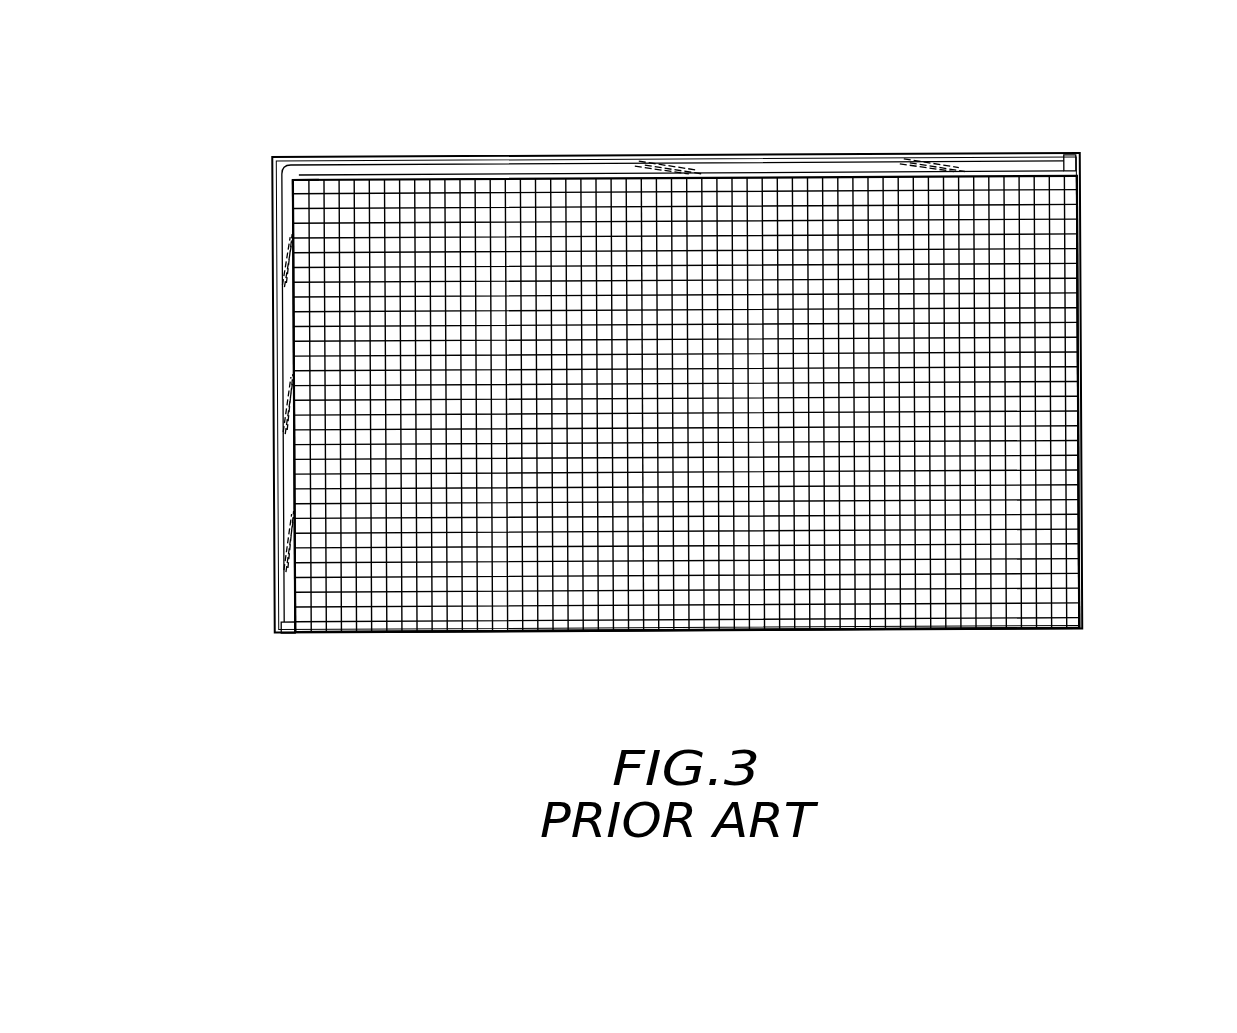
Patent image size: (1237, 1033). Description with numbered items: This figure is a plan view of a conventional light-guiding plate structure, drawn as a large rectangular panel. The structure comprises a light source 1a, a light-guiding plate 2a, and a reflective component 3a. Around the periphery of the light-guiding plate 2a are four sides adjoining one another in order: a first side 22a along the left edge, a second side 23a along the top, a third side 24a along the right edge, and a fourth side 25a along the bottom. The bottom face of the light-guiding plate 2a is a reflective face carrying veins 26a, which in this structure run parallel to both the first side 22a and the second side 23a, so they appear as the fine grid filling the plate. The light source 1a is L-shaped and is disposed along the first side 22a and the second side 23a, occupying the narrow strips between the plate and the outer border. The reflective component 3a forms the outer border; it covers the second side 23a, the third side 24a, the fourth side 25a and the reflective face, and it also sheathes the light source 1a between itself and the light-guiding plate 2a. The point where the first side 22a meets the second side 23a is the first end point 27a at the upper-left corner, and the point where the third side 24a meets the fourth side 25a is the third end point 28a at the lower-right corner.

The light source 1a is at (483, 170).
The light-guiding plate 2a is at (617, 210).
The reflective component 3a is at (278, 543).
The first side 22a is at (296, 352).
The second side 23a is at (707, 172).
The third side 24a is at (1081, 347).
The fourth side 25a is at (712, 632).
The veins 26a is at (643, 572).
The first end point 27a is at (293, 180).
The third end point 28a is at (1083, 630).